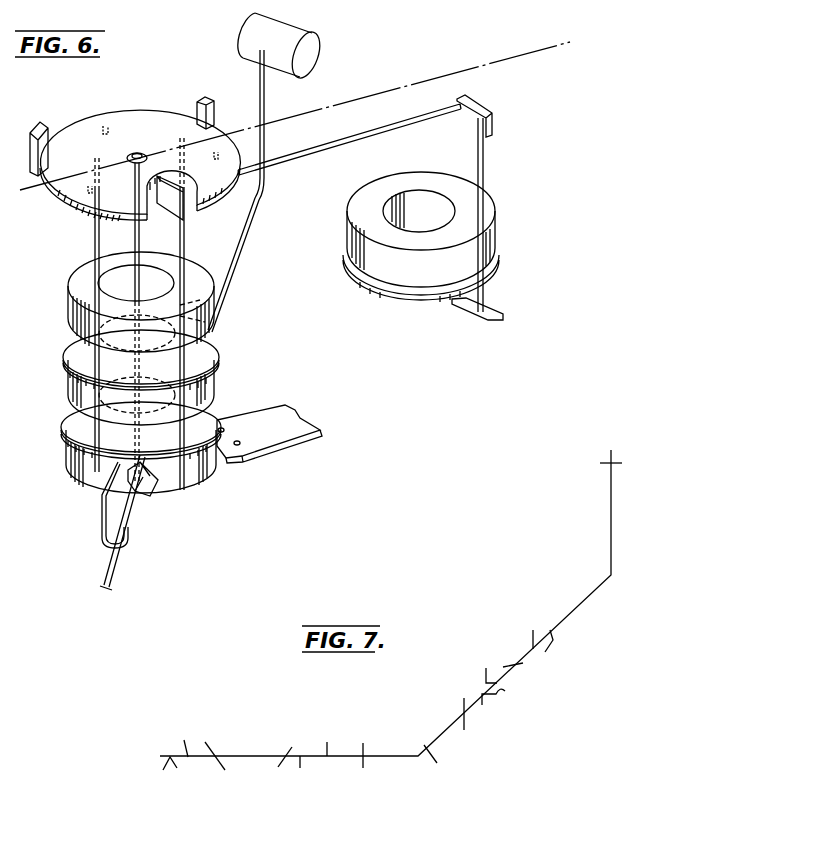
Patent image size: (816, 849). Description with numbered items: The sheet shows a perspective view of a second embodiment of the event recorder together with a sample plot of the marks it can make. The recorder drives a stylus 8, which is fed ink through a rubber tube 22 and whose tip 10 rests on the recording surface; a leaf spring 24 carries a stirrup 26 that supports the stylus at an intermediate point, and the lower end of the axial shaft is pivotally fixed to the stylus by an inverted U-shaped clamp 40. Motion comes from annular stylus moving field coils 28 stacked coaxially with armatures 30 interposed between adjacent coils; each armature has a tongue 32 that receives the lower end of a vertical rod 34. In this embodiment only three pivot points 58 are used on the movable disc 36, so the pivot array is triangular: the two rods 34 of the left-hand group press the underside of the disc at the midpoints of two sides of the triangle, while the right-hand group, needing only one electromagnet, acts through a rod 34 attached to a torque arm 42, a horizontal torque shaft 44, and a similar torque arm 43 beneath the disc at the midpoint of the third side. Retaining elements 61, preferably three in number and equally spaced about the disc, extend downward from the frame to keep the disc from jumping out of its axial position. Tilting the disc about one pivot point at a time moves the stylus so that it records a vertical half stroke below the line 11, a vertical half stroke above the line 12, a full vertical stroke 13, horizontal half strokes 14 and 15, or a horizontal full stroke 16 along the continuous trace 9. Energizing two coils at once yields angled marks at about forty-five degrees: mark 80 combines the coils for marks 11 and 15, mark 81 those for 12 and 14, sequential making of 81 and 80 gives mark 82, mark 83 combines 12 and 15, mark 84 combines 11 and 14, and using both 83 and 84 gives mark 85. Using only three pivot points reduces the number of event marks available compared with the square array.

In FIG. 6, the stylus 8 is at (109, 564).
In FIG. 6, the probe tip 10 is at (102, 590).
In FIG. 6, the rubber tube 22 is at (243, 241).
In FIG. 6, the leaf spring 24 is at (299, 419).
In FIG. 6, the stirrup 26 is at (133, 542).
In FIG. 6, the stylus moving field coils 28 is at (72, 291).
In FIG. 6, the armatures 30 is at (78, 419).
In FIG. 6, the tongue 32 is at (185, 310).
In FIG. 6, the rods 34 is at (95, 235).
In FIG. 6, the movable disc 36 is at (163, 112).
In FIG. 6, the inverted U-shaped clamp 40 is at (157, 483).
In FIG. 6, the torque arms 42 is at (481, 104).
In FIG. 6, the torque arms 43 is at (168, 199).
In FIG. 6, the torque shafts 44 is at (337, 153).
In FIG. 6, the pivot points 58 is at (105, 126).
In FIG. 6, the retaining elements 61 is at (40, 124).
In FIG. 7, the profile path 9 is at (611, 552).
In FIG. 7, the vertical half stroke below the line 11 is at (552, 645).
In FIG. 7, the vertical half stroke above the line 12 is at (535, 633).
In FIG. 7, the full vertical stroke 13 is at (463, 712).
In FIG. 7, the horizontal half stroke 14 is at (611, 513).
In FIG. 7, the horizontal half stroke 15 is at (611, 489).
In FIG. 7, the horizontal full stroke 16 is at (621, 465).
In FIG. 7, the mark 80 is at (556, 641).
In FIG. 7, the mark 81 is at (528, 646).
In FIG. 7, the mark 82 is at (420, 742).
In FIG. 7, the mark 83 is at (241, 757).
In FIG. 7, the mark 84 is at (249, 760).
In FIG. 7, the mark 85 is at (294, 757).